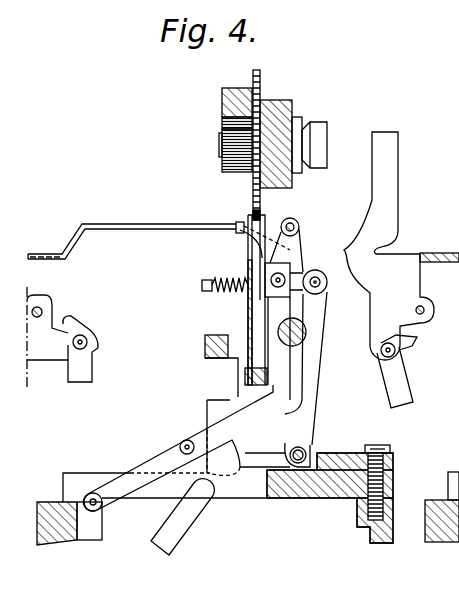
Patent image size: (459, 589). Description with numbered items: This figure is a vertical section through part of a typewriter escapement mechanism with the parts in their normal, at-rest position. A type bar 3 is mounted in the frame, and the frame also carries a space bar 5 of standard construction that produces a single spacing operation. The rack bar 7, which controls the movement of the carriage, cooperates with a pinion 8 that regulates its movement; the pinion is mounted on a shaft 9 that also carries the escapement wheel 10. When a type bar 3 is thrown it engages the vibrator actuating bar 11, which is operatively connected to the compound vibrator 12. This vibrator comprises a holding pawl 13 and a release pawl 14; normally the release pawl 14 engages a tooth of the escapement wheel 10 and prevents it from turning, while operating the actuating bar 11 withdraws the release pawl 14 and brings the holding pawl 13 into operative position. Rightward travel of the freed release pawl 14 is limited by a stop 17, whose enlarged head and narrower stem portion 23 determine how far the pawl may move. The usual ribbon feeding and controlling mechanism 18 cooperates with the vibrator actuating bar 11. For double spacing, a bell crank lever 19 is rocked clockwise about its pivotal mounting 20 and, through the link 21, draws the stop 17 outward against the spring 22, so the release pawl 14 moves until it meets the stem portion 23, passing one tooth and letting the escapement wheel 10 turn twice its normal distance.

The type bar 3 is at (45, 357).
The space bar 5 is at (197, 517).
The rack bar 7 is at (222, 98).
The pinion 8 is at (222, 124).
The shaft 9 is at (219, 150).
The escapement wheel 10 is at (262, 78).
The vibrator actuating bar 11 is at (150, 229).
The compound vibrator 12 is at (247, 322).
The holding pawl 13 is at (247, 247).
The release pawl 14 is at (265, 226).
The stop 17 is at (288, 266).
The ribbon feeding and controlling mechanism 18 is at (195, 430).
The bell crank lever 19 is at (312, 394).
The pivotal mounting 20 is at (310, 452).
The link 21 is at (322, 292).
The spring 22 is at (215, 293).
The stem portion 23 is at (204, 284).